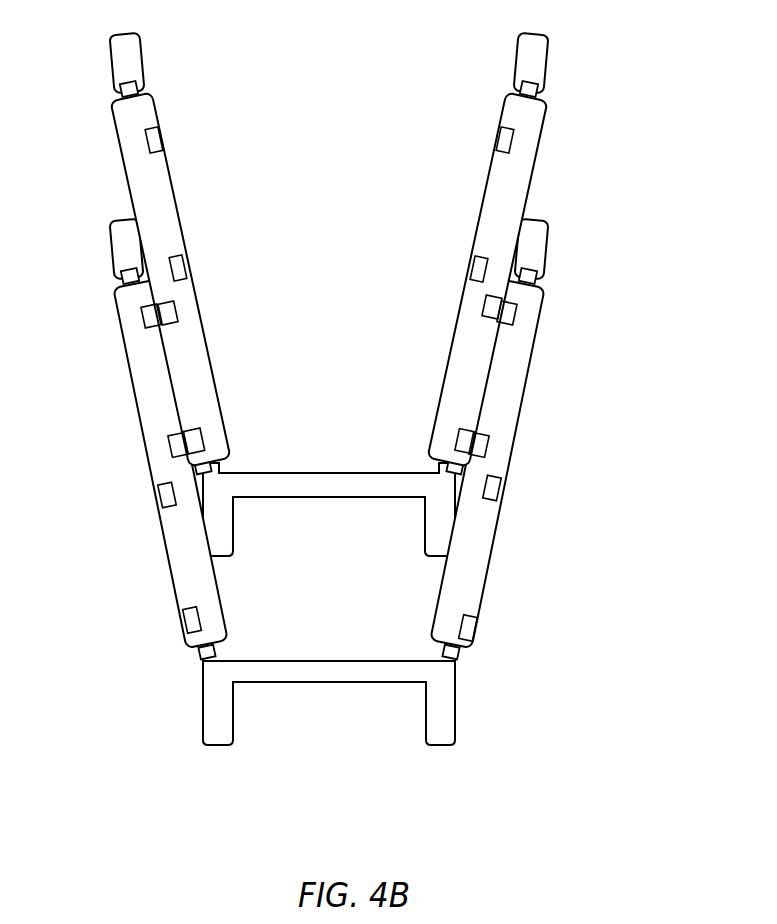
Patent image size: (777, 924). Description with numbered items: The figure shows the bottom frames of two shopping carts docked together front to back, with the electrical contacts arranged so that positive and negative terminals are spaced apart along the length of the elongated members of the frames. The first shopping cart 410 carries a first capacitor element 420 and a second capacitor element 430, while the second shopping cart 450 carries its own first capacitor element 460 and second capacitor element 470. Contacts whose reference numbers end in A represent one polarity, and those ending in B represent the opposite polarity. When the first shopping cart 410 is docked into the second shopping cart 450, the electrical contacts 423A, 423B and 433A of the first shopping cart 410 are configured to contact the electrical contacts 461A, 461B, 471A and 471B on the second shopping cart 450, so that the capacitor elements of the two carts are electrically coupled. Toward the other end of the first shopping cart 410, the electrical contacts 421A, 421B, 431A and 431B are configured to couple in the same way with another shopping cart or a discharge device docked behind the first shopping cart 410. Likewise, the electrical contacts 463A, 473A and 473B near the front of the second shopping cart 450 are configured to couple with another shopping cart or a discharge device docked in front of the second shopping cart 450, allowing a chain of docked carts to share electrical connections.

The first shopping cart 410 is at (317, 473).
The second shopping cart 450 is at (327, 658).
The first capacitor element 420 is at (120, 145).
The second capacitor element 430 is at (530, 145).
The first capacitor element 460 is at (132, 373).
The second capacitor element 470 is at (523, 395).
The electrical contact 421A is at (188, 260).
The electrical contact 421B is at (163, 137).
The electrical contact 423A is at (193, 440).
The electrical contact 423B is at (177, 312).
The electrical contact 431A is at (470, 268).
The electrical contact 431B is at (495, 138).
The electrical contact 433A is at (483, 310).
The electrical contact 461A is at (167, 443).
The electrical contact 461B is at (142, 315).
The electrical contact 463A is at (158, 498).
The electrical contact 471A is at (480, 450).
The electrical contact 471B is at (517, 310).
The electrical contact 473A is at (473, 632).
The electrical contact 473B is at (502, 493).